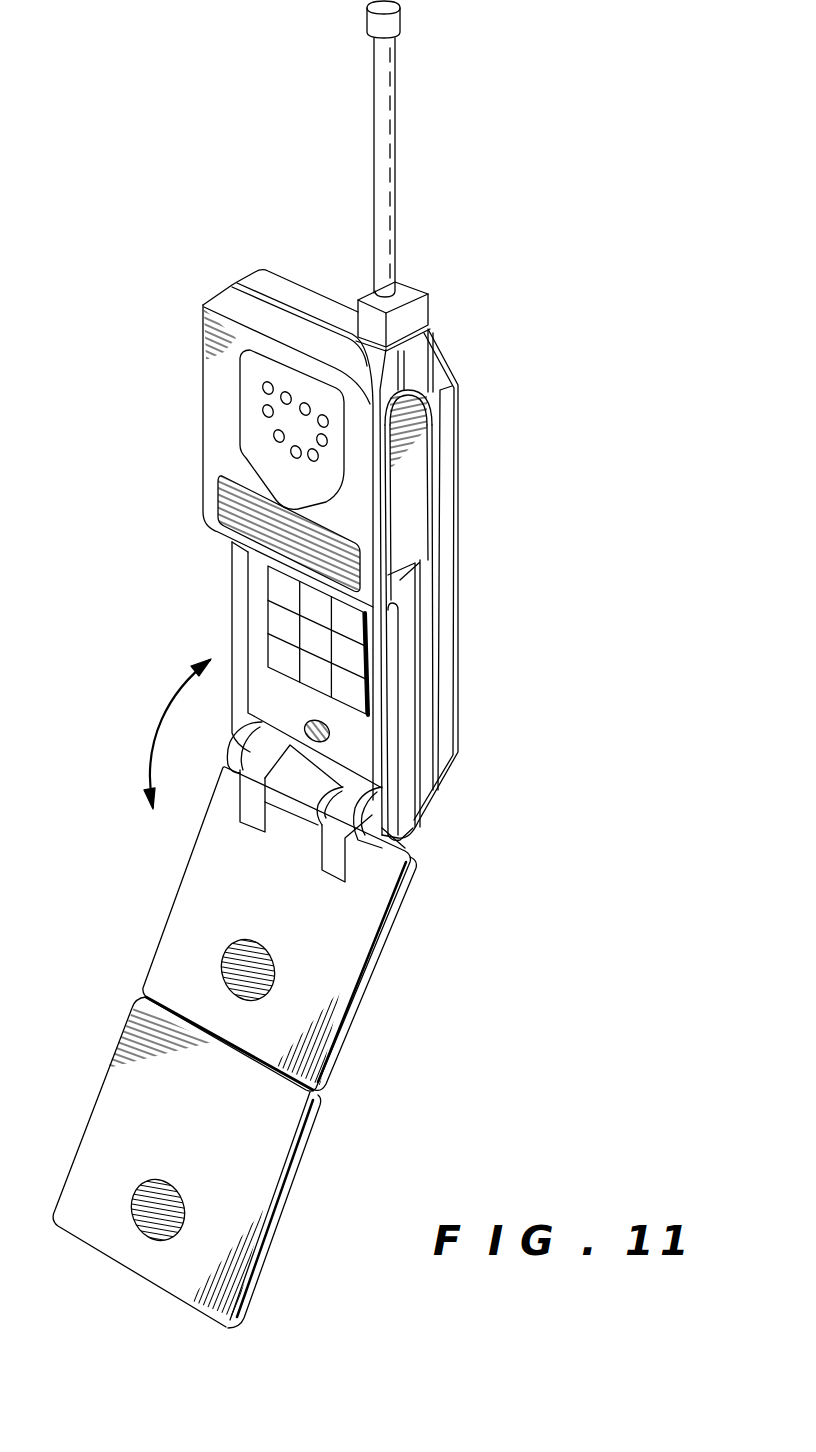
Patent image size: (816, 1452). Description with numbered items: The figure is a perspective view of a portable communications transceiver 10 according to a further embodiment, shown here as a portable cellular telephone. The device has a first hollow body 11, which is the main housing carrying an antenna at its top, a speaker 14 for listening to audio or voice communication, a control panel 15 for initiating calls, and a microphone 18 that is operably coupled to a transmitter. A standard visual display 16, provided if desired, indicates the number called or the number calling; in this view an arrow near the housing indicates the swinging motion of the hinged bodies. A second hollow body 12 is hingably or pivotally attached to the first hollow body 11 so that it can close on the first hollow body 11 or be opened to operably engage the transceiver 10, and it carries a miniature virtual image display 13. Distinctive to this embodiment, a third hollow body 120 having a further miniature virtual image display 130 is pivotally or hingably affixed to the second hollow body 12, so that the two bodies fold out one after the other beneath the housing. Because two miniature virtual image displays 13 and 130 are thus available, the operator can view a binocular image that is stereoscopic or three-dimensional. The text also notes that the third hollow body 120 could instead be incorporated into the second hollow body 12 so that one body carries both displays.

The portable communications transceiver 10 is at (568, 1181).
The first hollow body 11 is at (455, 576).
The second hollow body 12 is at (394, 921).
The miniature virtual image display 13 is at (236, 940).
The speaker 14 is at (240, 386).
The control panel 15 is at (266, 608).
The standard visual display 16 is at (160, 728).
The microphone 18 is at (310, 718).
The third hollow body 120 is at (280, 1211).
The miniature virtual image display 130 is at (147, 1180).